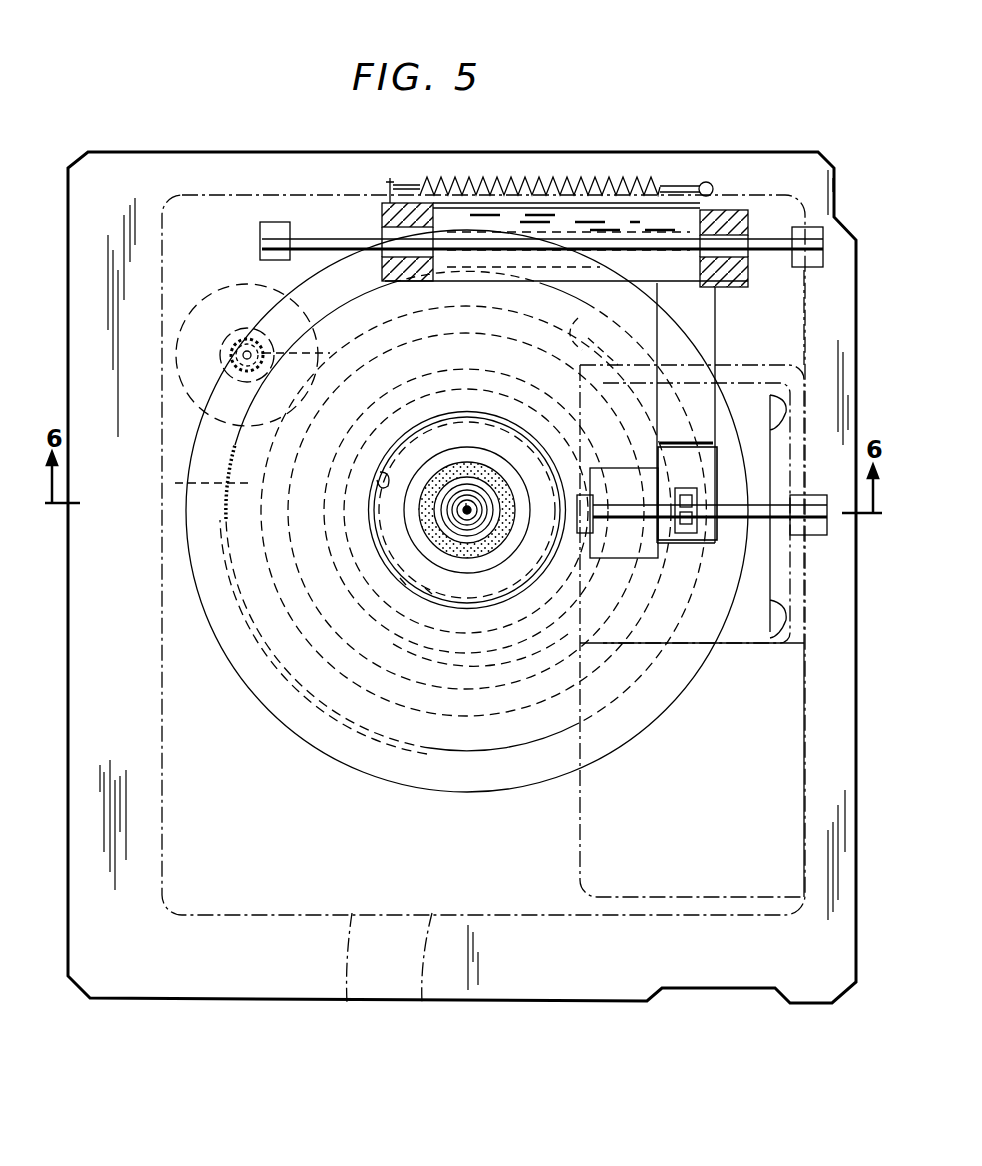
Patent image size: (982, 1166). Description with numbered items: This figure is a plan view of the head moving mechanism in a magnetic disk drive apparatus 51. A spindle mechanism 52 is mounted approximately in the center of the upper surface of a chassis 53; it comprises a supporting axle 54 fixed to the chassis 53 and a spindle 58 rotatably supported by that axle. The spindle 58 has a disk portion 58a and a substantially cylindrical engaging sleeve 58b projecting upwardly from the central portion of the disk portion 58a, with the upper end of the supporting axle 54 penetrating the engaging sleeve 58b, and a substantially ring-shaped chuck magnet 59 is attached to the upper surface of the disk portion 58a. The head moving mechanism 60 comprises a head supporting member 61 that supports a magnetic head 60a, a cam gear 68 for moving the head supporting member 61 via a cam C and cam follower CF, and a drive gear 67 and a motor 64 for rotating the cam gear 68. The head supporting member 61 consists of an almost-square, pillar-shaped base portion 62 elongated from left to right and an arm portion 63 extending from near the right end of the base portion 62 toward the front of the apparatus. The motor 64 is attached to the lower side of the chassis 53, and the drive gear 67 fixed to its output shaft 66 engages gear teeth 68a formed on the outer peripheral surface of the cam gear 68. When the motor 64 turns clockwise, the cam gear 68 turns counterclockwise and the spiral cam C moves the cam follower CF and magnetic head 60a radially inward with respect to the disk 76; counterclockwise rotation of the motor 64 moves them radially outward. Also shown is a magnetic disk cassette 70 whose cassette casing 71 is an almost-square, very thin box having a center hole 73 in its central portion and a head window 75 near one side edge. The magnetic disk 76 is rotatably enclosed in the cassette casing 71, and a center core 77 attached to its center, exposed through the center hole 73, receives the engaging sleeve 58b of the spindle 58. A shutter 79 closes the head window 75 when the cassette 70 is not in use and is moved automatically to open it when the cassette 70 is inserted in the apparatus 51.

The magnetic disk drive apparatus 51 is at (846, 216).
The spindle mechanism 52 is at (407, 430).
The chassis 53 is at (852, 906).
The supporting axle 54 is at (470, 517).
The spindle 58 is at (380, 556).
The disk portion 58a is at (428, 588).
The engaging sleeve 58b is at (467, 505).
The chuck magnet 59 is at (503, 543).
The head moving mechanism 60 is at (738, 362).
The magnetic head 60a is at (692, 510).
The head supporting member 61 is at (725, 212).
The base portion 62 is at (490, 284).
The arm portion 63 is at (700, 330).
The motor 64 is at (195, 355).
The output shaft 66 is at (298, 354).
The drive gear 67 is at (222, 322).
The cam gear 68 is at (252, 520).
The gear teeth 68a is at (175, 483).
The magnetic disk cassette 70 is at (431, 975).
The cassette casing 71 is at (362, 975).
The center hole 73 is at (380, 480).
The head window 75 is at (772, 428).
The magnetic disk 76 is at (240, 655).
The center core 77 is at (403, 573).
The shutter 79 is at (778, 702).
The cam C is at (340, 555).
The cam follower CF is at (665, 530).